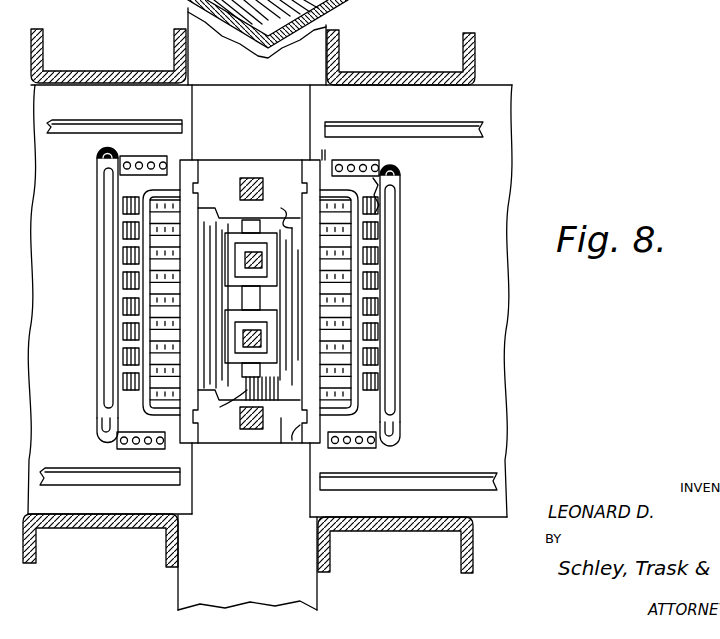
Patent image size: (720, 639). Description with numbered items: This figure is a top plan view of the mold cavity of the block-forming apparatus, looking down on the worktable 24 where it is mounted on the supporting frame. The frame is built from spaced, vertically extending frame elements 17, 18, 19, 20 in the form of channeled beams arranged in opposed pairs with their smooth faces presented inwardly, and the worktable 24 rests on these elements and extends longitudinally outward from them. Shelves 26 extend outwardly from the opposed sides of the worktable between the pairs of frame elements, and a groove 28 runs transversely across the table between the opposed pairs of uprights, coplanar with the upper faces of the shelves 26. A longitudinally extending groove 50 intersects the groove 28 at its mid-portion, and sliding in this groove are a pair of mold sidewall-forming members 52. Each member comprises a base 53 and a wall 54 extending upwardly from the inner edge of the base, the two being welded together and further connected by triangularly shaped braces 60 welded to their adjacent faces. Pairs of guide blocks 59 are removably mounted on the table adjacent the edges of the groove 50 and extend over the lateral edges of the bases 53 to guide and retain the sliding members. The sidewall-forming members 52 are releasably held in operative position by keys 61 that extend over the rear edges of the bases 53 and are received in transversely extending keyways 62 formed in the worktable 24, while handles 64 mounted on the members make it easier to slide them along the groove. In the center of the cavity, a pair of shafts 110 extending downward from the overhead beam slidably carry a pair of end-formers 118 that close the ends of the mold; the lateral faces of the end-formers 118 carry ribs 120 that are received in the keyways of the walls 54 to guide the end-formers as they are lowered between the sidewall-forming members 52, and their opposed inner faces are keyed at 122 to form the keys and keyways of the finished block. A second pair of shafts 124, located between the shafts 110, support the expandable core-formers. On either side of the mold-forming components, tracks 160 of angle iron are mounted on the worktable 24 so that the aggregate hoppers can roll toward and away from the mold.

The frame element 17 is at (108, 526).
The frame element 18 is at (43, 52).
The frame element 19 is at (470, 538).
The frame element 20 is at (340, 73).
The worktable 24 is at (80, 440).
The shelf 26 is at (307, 52).
The groove 28 is at (282, 112).
The groove 50 is at (400, 182).
The sidewall-forming member 52 is at (312, 252).
The base 53 is at (322, 166).
The wall 54 is at (183, 172).
The guide block 59 is at (165, 448).
The brace 60 is at (372, 280).
The key 61 is at (100, 296).
The keyway 62 is at (100, 164).
The handle 64 is at (143, 243).
The shaft 110 is at (258, 180).
The end-former 118 is at (281, 420).
The rib 120 is at (300, 443).
The keying 122 is at (248, 304).
The shaft 124 is at (247, 252).
The track 160 is at (77, 128).